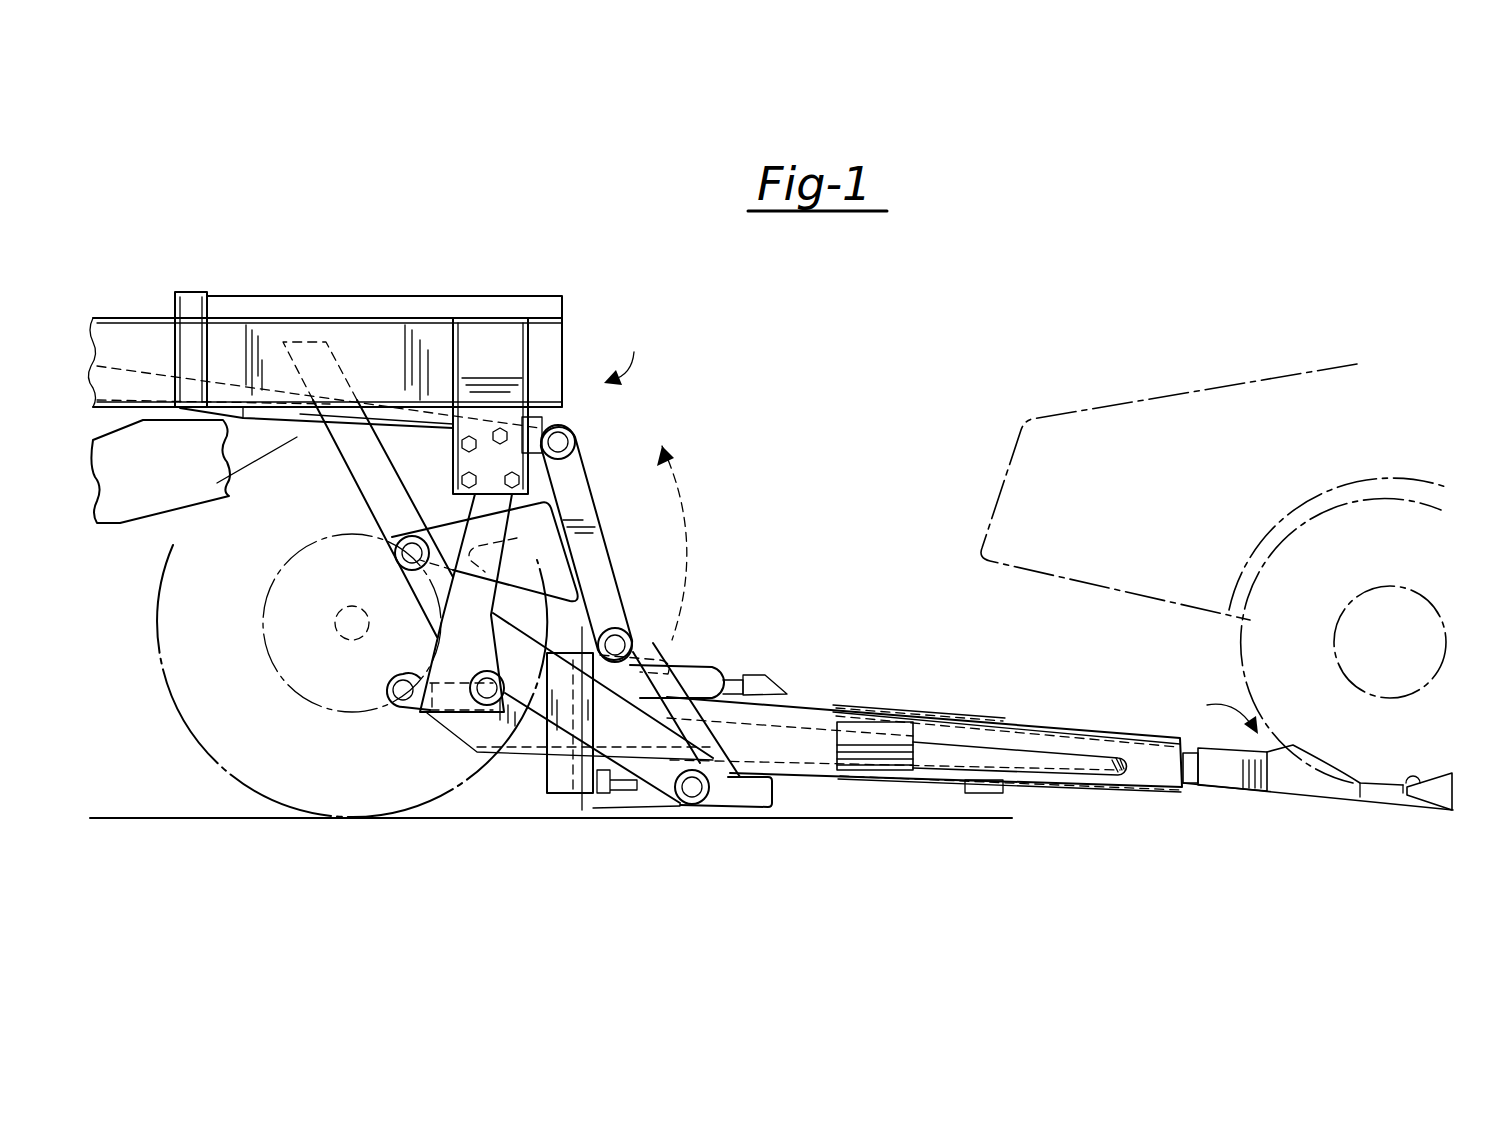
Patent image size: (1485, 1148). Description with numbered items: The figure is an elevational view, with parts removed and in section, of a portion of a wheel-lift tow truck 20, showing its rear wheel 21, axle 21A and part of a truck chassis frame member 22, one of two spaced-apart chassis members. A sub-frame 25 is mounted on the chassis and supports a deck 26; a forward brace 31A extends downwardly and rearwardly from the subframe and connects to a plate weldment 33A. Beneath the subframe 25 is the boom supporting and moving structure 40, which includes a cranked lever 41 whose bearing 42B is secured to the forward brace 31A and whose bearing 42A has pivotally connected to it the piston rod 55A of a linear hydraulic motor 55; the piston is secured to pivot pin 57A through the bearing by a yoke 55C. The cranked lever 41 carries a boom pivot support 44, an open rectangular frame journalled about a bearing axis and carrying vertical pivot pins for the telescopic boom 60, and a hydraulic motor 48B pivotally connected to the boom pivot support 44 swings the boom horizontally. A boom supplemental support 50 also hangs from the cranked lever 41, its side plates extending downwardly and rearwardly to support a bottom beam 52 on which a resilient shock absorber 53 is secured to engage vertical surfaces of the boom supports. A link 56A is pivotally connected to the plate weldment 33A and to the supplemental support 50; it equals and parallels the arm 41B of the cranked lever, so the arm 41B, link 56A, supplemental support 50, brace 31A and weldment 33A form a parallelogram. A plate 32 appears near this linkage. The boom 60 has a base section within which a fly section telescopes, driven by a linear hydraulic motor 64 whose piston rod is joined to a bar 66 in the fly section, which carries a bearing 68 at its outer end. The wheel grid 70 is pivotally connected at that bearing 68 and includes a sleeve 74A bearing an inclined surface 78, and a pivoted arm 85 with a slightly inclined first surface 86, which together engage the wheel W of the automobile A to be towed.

The tow truck 20 is at (617, 361).
The rear wheel 21 is at (203, 573).
The axle 21A is at (345, 636).
The truck chassis frame member 22 is at (160, 467).
The sub-frame 25 is at (512, 270).
The deck 26 is at (392, 296).
The forward brace 31A is at (357, 484).
The plate 32 is at (497, 538).
The plate weldment 33A is at (487, 651).
The boom supporting and moving structure 40 is at (658, 498).
The cranked lever 41 is at (610, 593).
The arm of cranked lever 41B is at (503, 594).
The bearing 42A is at (580, 428).
The bearing 42B is at (398, 556).
The boom pivot support 44 is at (547, 780).
The hydraulic motor 48B is at (677, 665).
The boom supplemental support 50 is at (780, 796).
The bottom beam 52 is at (655, 818).
The resilient shock absorber 53 is at (602, 794).
The linear hydraulic motor 55 is at (233, 414).
The piston rod 55A is at (437, 428).
The yoke 55C is at (540, 421).
The link 56A is at (517, 700).
The pivot pin 57A is at (576, 456).
The telescopic boom 60 is at (829, 690).
The linear hydraulic motor 64 is at (877, 747).
The bar 66 is at (1125, 758).
The bearing 68 is at (1200, 784).
The wheel grid 70 is at (1214, 715).
The sleeve 74A is at (1298, 787).
The inclined surface 78 is at (1326, 752).
The pivoted arm 85 is at (1423, 803).
The first inclined surface 86 is at (1403, 787).
The wheel W is at (1260, 662).
The automobile A is at (1093, 590).